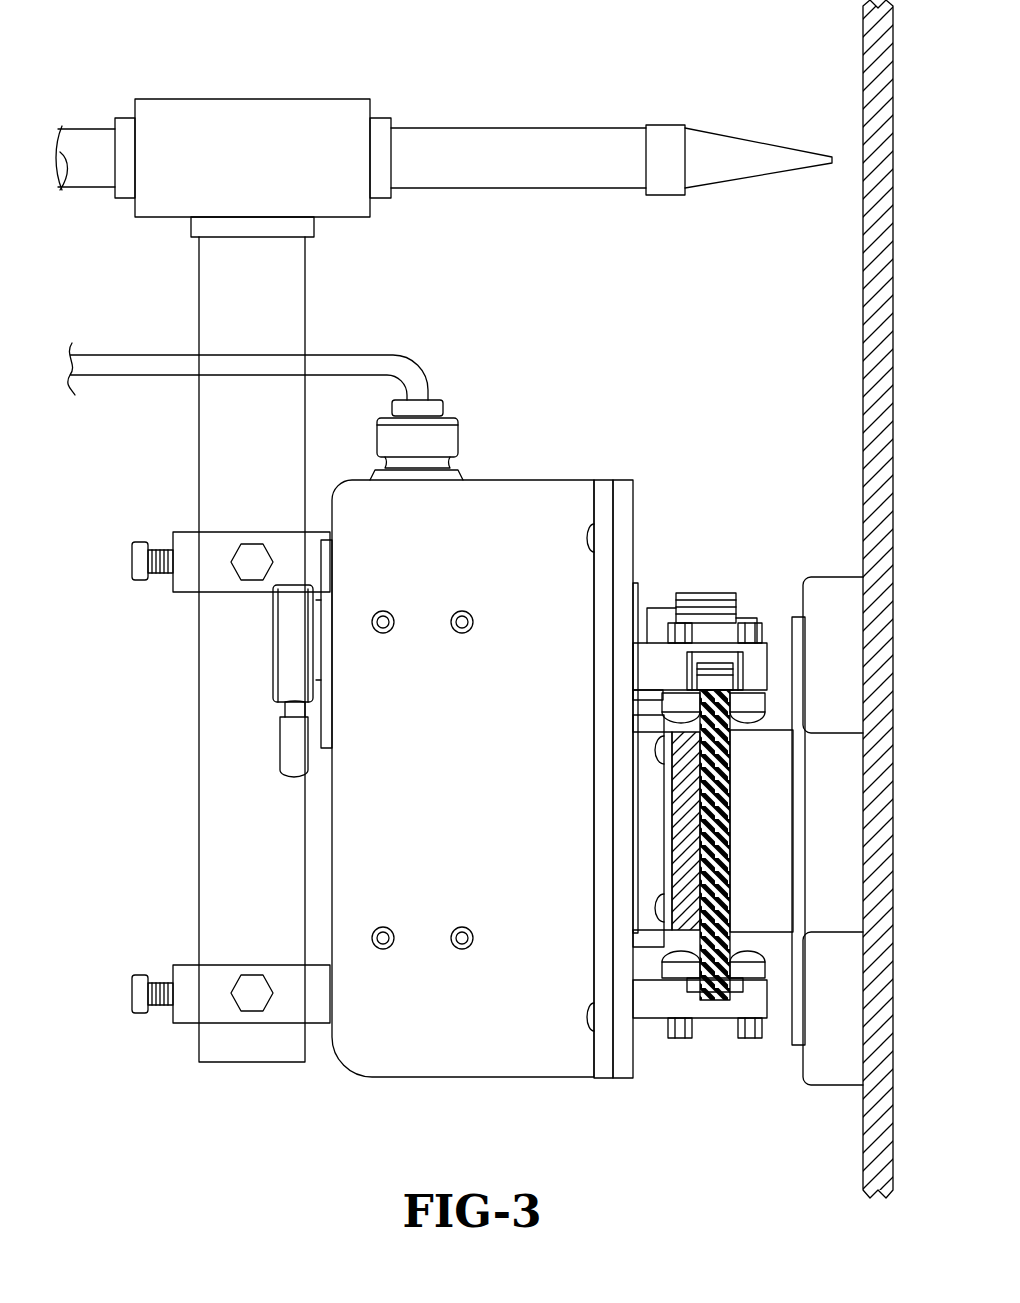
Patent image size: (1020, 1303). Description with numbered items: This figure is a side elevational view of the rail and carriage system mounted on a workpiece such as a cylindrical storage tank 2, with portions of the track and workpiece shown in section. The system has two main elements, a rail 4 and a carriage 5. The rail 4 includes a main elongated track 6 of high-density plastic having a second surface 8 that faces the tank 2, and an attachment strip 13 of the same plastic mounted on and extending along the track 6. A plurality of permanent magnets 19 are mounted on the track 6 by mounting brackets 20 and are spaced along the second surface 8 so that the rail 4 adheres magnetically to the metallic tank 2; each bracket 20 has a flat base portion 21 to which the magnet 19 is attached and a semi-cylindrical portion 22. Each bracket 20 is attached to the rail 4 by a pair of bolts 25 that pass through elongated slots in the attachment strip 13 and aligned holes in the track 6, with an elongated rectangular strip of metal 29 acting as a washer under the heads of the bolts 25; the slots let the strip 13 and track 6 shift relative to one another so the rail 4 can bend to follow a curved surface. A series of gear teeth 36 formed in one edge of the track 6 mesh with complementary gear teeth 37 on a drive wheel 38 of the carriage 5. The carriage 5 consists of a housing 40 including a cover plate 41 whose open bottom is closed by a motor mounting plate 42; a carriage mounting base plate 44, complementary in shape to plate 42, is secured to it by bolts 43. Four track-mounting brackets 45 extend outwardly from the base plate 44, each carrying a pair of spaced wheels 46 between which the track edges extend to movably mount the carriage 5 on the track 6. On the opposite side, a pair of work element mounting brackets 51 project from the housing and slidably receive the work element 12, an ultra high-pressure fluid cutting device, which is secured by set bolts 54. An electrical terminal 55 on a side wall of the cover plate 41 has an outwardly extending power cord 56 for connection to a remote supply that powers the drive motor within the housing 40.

The cylindrical storage tank 2 is at (863, 48).
The work element 12 is at (505, 140).
The power cord 56 is at (361, 355).
The electrical terminal 55 is at (452, 436).
The carriage 5 is at (552, 476).
The motor mounting plate 42 is at (602, 487).
The carriage mounting base plate 44 is at (625, 502).
The bolts 43 is at (585, 538).
The set bolts 54 is at (252, 555).
The work element mounting brackets 51 is at (190, 585).
The track-mounting brackets 45 is at (655, 667).
The gear teeth 37 is at (697, 603).
The drive wheel 38 is at (733, 607).
The mounting brackets 20 is at (790, 612).
The permanent magnets 19 is at (830, 583).
The gear teeth 36 is at (722, 678).
The wheels 46 is at (765, 707).
The bolts 25 is at (658, 748).
The strip of metal 29 is at (665, 772).
The attachment strip 13 is at (665, 820).
The rail 4 is at (665, 853).
The track 6 is at (740, 789).
The semi-cylindrical portion 22 is at (772, 828).
The second surface 8 is at (733, 872).
The housing 40 is at (433, 803).
The cover plate 41 is at (478, 1053).
The flat base portion 21 is at (797, 1048).